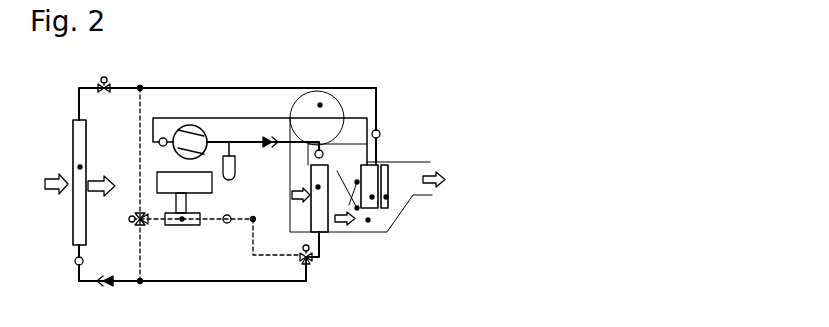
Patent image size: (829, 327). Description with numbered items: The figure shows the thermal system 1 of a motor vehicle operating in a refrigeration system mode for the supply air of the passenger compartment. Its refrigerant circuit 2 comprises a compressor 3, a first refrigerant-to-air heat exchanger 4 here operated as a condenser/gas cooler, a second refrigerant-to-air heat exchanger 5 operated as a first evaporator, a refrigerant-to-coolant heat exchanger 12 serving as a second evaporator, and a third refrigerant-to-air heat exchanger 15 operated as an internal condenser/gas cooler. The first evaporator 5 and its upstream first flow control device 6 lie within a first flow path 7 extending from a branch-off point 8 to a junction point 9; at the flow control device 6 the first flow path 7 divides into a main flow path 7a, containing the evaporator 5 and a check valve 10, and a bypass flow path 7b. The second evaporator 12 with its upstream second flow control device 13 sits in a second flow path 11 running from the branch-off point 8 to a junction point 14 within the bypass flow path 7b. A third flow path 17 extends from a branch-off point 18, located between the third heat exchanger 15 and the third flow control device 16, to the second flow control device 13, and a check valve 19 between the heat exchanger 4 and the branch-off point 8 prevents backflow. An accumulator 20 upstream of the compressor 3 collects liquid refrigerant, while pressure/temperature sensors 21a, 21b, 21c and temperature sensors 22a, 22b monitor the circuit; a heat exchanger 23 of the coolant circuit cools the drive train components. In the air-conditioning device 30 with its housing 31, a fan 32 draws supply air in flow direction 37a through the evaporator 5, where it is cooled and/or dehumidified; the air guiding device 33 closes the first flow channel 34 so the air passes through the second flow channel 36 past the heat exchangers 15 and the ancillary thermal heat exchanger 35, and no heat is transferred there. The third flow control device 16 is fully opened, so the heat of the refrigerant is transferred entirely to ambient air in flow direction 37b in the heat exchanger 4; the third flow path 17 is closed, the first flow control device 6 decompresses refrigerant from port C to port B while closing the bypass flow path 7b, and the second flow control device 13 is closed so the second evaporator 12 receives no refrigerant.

The thermal system 1 is at (407, 59).
The refrigerant circuit 2 is at (77, 80).
The compressor 3 is at (193, 128).
The first refrigerant-to-air heat exchanger 4 is at (79, 166).
The second refrigerant-to-air heat exchanger 5 is at (316, 186).
The first flow control device 6 is at (302, 248).
The first flow path 7 is at (234, 282).
The main flow path 7a is at (323, 250).
The bypass flow path 7b is at (252, 256).
The branch-off point 8 is at (142, 283).
The junction point 9 is at (253, 140).
The check valve 10 is at (272, 132).
The second flow path 11 is at (137, 246).
The refrigerant-to-coolant heat exchanger 12 is at (183, 221).
The second flow control device 13 is at (128, 219).
The junction point 14 is at (255, 218).
The third refrigerant-to-air heat exchanger 15 is at (373, 199).
The third flow control device 16 is at (104, 77).
The third flow path 17 is at (138, 117).
The branch-off point 18 is at (140, 85).
The check valve 19 is at (105, 284).
The accumulator 20 is at (234, 178).
The pressure/temperature sensor 21a is at (158, 145).
The pressure/temperature sensor 21b is at (76, 265).
The pressure/temperature sensor 21c is at (224, 216).
The temperature sensor 22a is at (323, 153).
The temperature sensor 22b is at (380, 133).
The heat exchanger 23 is at (191, 189).
The air-conditioning device 30 is at (416, 212).
The housing 31 is at (427, 161).
The fan 32 is at (321, 104).
The air guiding device 33 is at (337, 171).
The first flow channel 34 is at (357, 210).
The ancillary thermal heat exchanger 35 is at (387, 199).
The second flow channel 36 is at (369, 222).
The flow direction 37a is at (371, 198).
The flow direction 37b is at (58, 186).